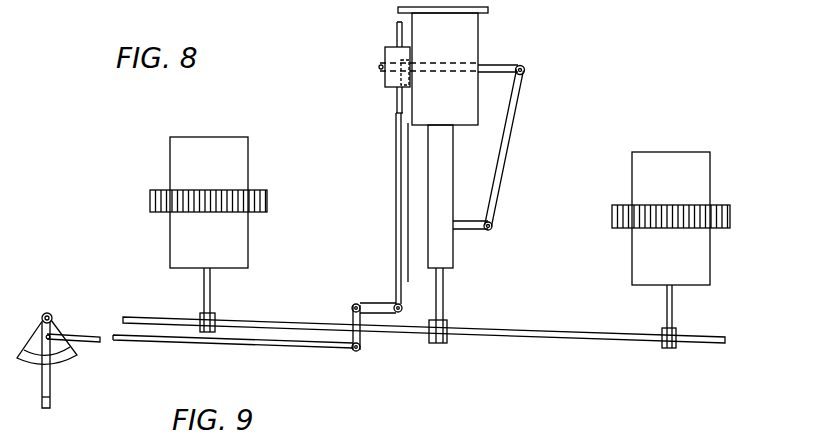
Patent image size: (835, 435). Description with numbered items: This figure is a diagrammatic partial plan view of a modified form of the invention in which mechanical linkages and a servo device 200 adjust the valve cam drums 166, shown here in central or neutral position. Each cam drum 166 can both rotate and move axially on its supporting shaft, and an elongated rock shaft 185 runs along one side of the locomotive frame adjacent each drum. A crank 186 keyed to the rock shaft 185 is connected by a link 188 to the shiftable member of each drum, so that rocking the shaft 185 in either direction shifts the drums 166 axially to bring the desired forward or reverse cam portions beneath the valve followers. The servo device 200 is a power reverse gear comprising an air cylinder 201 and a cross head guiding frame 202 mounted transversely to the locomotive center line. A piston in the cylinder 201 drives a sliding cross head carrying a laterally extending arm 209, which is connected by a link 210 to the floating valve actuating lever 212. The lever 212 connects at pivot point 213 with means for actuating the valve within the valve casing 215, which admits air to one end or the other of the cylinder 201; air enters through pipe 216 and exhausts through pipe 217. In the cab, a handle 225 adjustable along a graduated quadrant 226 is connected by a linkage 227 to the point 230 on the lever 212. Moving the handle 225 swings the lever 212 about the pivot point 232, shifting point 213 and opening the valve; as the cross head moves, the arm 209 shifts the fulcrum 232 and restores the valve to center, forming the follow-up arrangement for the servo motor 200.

The cam drum 166 is at (183, 157).
The rock shaft 185 is at (512, 330).
The crank 186 is at (677, 332).
The link 188 is at (207, 287).
The servo device 200 is at (483, 32).
The air cylinder 201 is at (472, 109).
The cross head guiding frame 202 is at (461, 165).
The laterally extending arm 209 is at (470, 230).
The link 210 is at (507, 162).
The valve actuating lever 212 is at (503, 63).
The pivot point 213 is at (384, 66).
The valve casing 215 is at (387, 88).
The pipe 216 is at (393, 110).
The pipe 217 is at (396, 22).
The valve actuating lever 225 is at (55, 379).
The quadrant 226 is at (30, 366).
The linkage 227 is at (400, 180).
The point 230 is at (428, 52).
The pivot point 232 is at (524, 74).